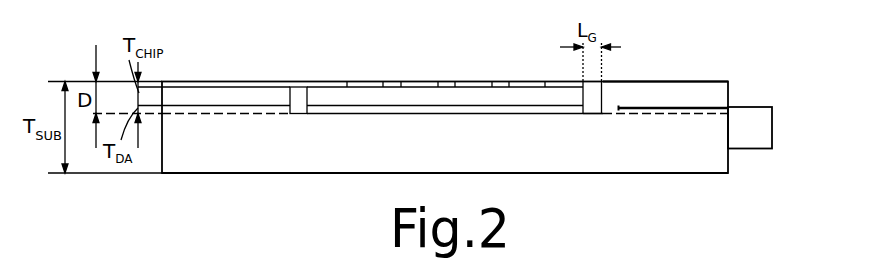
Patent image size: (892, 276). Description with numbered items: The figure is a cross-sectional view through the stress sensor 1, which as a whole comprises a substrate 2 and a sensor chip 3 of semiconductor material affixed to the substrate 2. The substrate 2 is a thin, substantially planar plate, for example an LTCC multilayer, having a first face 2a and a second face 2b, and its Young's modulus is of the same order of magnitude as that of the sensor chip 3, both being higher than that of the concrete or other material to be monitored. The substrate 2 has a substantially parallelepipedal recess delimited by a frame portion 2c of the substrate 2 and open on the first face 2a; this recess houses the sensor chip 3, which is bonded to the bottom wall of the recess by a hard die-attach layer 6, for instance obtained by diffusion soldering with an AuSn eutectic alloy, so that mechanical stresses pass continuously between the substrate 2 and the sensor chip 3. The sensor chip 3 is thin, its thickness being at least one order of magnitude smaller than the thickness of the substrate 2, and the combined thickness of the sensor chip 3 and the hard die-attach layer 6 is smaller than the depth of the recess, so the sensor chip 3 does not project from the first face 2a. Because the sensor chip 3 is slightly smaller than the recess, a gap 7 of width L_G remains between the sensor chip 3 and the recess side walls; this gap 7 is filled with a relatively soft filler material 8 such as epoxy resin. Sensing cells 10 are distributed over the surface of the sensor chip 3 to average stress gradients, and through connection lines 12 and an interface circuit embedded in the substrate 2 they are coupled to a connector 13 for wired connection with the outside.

The stress sensor 1 is at (201, 61).
The substrate 2 is at (732, 163).
The first face 2a is at (664, 78).
The second face 2b is at (258, 176).
The frame portion 2c is at (233, 97).
The sensor chip 3 is at (434, 97).
The hard die-attach layer 6 is at (532, 110).
The gap 7 is at (302, 86).
The filler material 8 is at (592, 97).
The sensing cells 10 is at (407, 82).
The connection lines 12 is at (707, 108).
The connector 13 is at (765, 111).